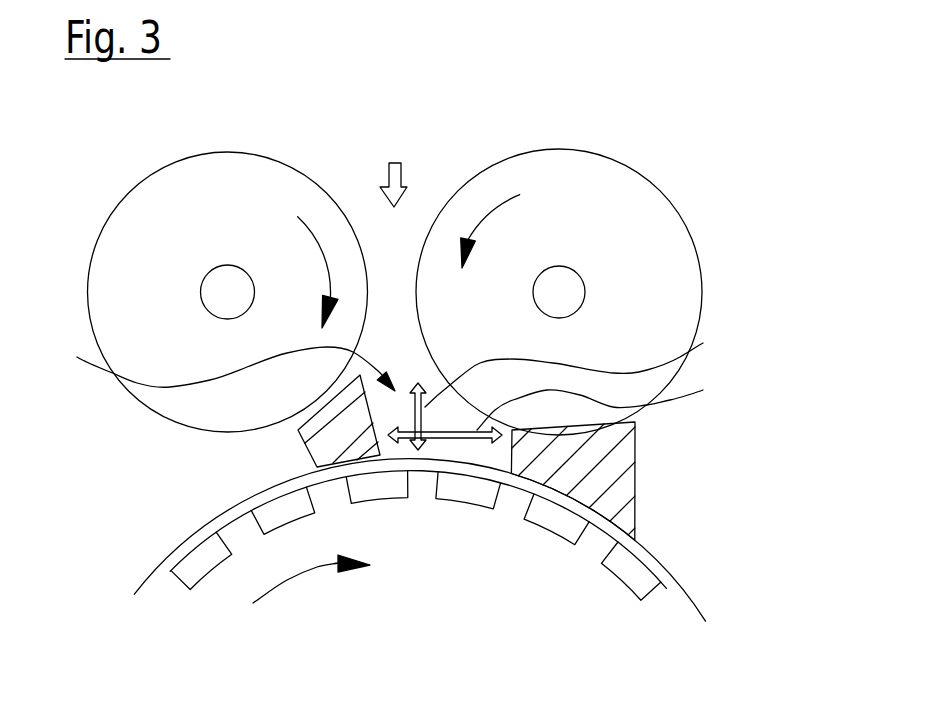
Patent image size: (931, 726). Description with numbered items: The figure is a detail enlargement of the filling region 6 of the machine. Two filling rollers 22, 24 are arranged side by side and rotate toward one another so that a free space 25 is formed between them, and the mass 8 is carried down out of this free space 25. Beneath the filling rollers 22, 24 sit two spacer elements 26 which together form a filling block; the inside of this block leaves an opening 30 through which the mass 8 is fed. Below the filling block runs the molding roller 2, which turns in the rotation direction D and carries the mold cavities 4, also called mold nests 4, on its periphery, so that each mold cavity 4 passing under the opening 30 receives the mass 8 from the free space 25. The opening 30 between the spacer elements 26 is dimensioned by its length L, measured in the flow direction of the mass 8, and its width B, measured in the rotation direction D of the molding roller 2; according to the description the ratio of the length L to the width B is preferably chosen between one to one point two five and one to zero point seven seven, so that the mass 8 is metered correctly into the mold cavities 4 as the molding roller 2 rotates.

The molding roller 2 is at (653, 558).
The mold cavities 4 is at (400, 490).
The filling region 6 is at (607, 108).
The mass 8 is at (400, 163).
The filling roller 22 is at (673, 238).
The filling roller 24 is at (243, 165).
The free space 25 is at (410, 266).
The spacer elements 26 is at (300, 450).
The opening 30 is at (217, 365).
The length L is at (574, 365).
The width B is at (601, 402).
The rotation direction D is at (311, 591).